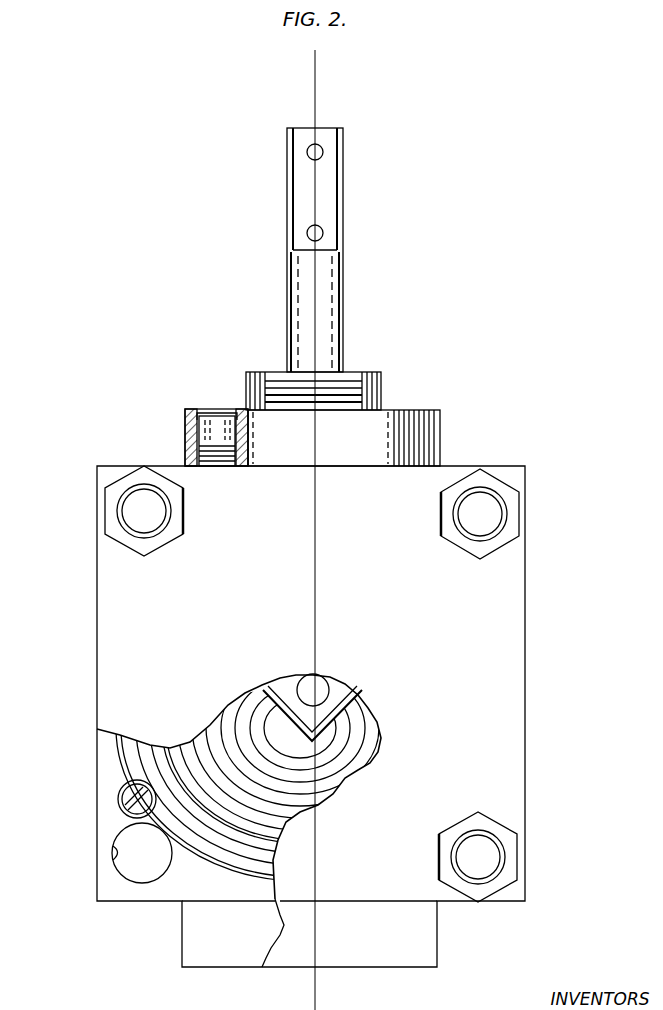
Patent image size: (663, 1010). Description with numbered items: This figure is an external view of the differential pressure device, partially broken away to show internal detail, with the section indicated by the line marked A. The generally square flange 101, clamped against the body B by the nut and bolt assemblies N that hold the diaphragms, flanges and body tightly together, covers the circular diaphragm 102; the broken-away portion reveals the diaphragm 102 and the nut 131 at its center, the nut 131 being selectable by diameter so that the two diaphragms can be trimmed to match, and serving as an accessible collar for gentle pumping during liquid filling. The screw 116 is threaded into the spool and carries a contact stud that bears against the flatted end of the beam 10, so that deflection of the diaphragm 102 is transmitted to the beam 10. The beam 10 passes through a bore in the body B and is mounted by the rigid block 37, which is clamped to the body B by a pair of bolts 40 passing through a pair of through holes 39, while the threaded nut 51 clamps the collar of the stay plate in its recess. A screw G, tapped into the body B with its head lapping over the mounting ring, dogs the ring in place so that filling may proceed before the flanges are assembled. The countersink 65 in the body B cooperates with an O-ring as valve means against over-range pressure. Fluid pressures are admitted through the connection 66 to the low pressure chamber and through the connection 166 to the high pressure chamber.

The beam 10 is at (322, 286).
The threaded nut 51 is at (340, 380).
The rigid block 37 is at (407, 431).
The through holes 39 is at (197, 409).
The bolts 40 is at (222, 428).
The nut and bolt assemblies N is at (131, 488).
The flange 101 is at (436, 623).
The screw 116 is at (319, 688).
The nut 131 is at (325, 728).
The diaphragm 102 is at (304, 784).
The screw G is at (125, 788).
The body B is at (118, 801).
The countersink 65 is at (120, 870).
The connection 66 is at (214, 935).
The connection 166 is at (349, 935).
The section line A- A is at (322, 90).